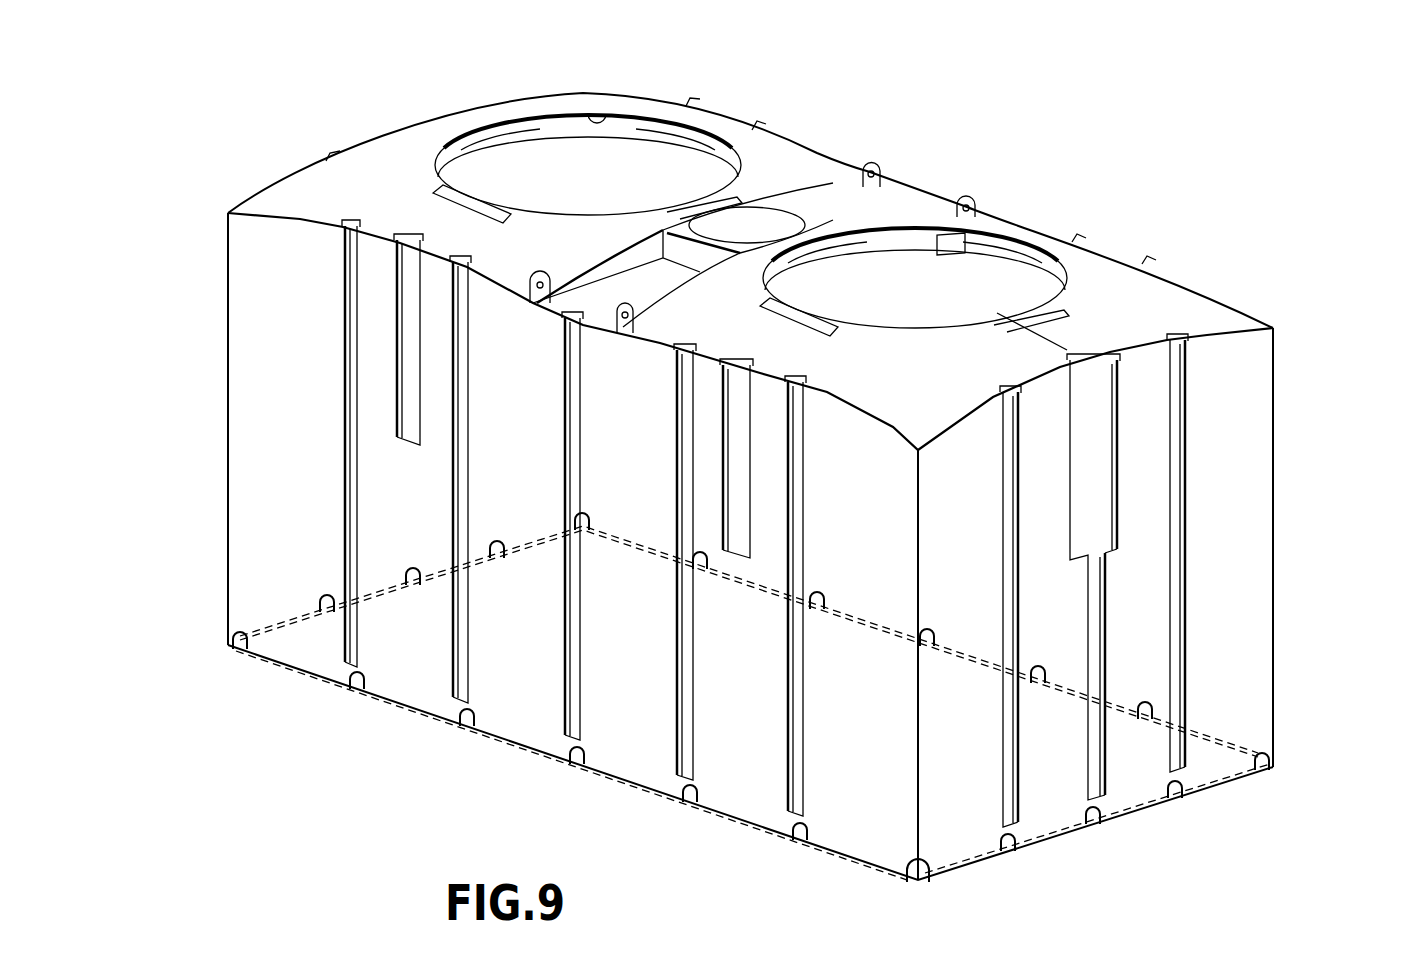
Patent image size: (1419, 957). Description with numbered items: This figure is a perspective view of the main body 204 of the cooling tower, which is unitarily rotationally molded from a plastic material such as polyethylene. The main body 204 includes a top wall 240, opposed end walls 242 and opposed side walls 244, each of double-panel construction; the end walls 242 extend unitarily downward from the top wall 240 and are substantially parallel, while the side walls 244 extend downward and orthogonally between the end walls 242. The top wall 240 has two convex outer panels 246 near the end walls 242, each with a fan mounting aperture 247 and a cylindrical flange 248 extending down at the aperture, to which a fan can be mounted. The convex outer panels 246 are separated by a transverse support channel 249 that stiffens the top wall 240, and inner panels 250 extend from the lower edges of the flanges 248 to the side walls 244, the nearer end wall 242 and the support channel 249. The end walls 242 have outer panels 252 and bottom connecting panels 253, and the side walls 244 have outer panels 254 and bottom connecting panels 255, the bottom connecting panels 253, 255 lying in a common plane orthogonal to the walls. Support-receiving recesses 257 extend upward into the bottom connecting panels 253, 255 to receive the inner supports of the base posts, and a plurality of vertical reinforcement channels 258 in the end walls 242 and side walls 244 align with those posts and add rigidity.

The main body 204 is at (1292, 352).
The top wall 240 is at (1118, 253).
The end walls 242 is at (227, 342).
The side walls 244 is at (246, 402).
The convex outer panels 246 is at (363, 201).
The fan mounting apertures 247 is at (537, 105).
The cylindrical flanges 248 is at (607, 115).
The transverse support channel 249 is at (858, 203).
The inner panels 250 is at (952, 246).
The outer panels 252 is at (282, 622).
The bottom connecting panels 253 is at (1212, 790).
The outer panels 254 is at (503, 742).
The bottom connecting panels 255 is at (562, 770).
The support-receiving recesses 257 is at (705, 800).
The vertical reinforcement channels 258 is at (468, 378).